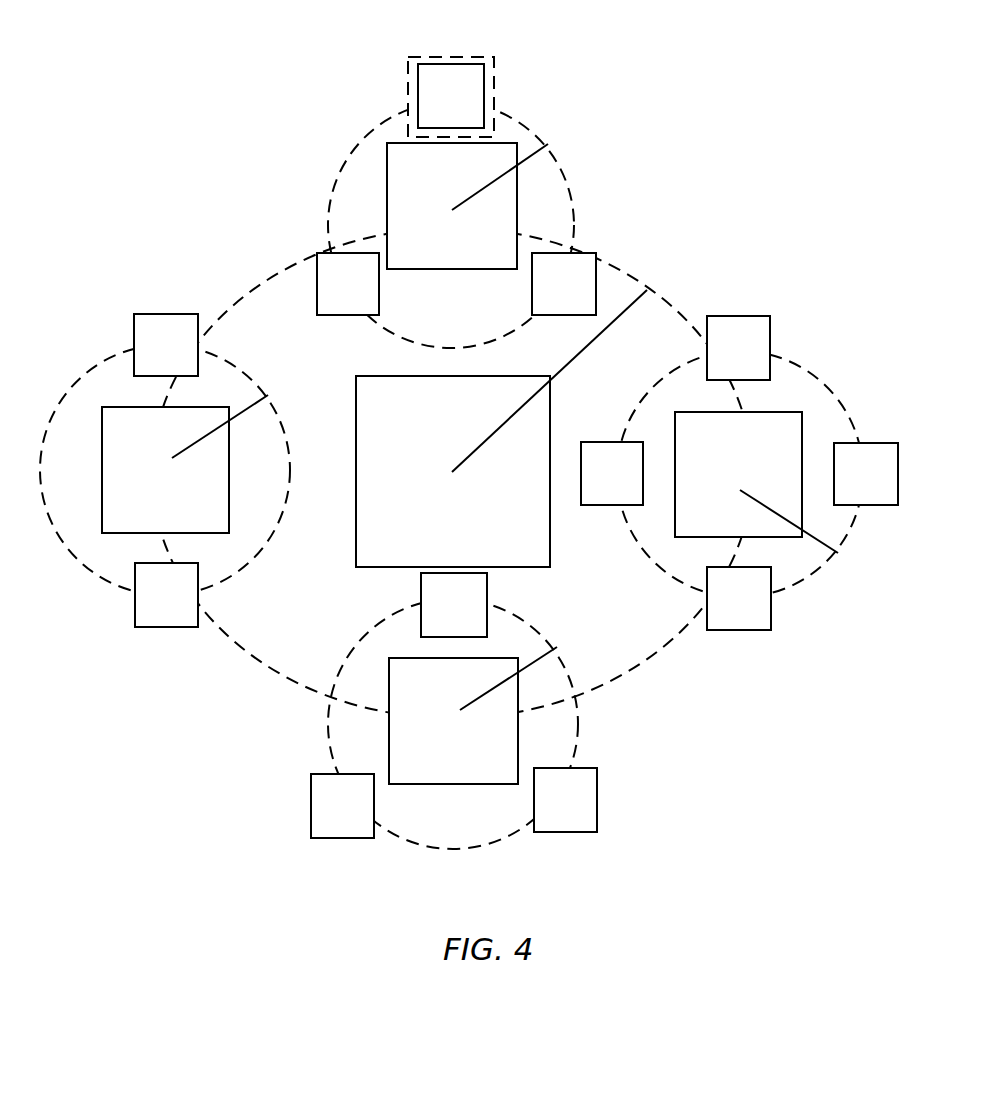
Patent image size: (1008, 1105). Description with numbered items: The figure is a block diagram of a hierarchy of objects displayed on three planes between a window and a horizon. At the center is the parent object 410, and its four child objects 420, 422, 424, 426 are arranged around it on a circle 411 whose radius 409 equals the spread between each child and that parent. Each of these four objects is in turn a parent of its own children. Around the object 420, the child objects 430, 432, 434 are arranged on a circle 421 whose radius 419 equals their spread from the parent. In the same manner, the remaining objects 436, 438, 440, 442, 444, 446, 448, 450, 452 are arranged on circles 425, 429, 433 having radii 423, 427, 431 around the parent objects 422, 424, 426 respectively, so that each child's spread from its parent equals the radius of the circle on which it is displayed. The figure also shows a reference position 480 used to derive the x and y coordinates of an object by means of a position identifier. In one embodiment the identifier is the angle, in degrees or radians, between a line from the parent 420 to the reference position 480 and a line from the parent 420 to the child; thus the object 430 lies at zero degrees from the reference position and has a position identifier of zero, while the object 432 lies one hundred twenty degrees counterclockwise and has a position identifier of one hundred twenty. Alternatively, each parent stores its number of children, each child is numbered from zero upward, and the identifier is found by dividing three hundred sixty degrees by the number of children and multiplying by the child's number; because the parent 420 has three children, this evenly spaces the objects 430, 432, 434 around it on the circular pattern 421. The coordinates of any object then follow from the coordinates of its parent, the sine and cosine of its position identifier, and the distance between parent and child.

The radius 409 is at (598, 337).
The parent object 410 is at (434, 503).
The circle 411 is at (660, 647).
The radius 419 is at (530, 157).
The object 420 is at (433, 238).
The circle 421 is at (572, 180).
The object 422 is at (721, 485).
The radius 423 is at (803, 531).
The object 424 is at (148, 482).
The circle 425 is at (830, 565).
The object 426 is at (436, 733).
The radius 427 is at (230, 418).
The circle 429 is at (263, 550).
The child object 430 is at (432, 106).
The radius 431 is at (520, 670).
The child object 432 is at (329, 296).
The circle 433 is at (562, 663).
The child object 434 is at (545, 296).
The object 436 is at (719, 358).
The object 438 is at (593, 484).
The object 440 is at (847, 484).
The object 442 is at (720, 608).
The object 444 is at (147, 355).
The object 446 is at (147, 604).
The object 448 is at (435, 613).
The object 450 is at (323, 816).
The object 452 is at (546, 810).
The reference position 480 is at (466, 55).